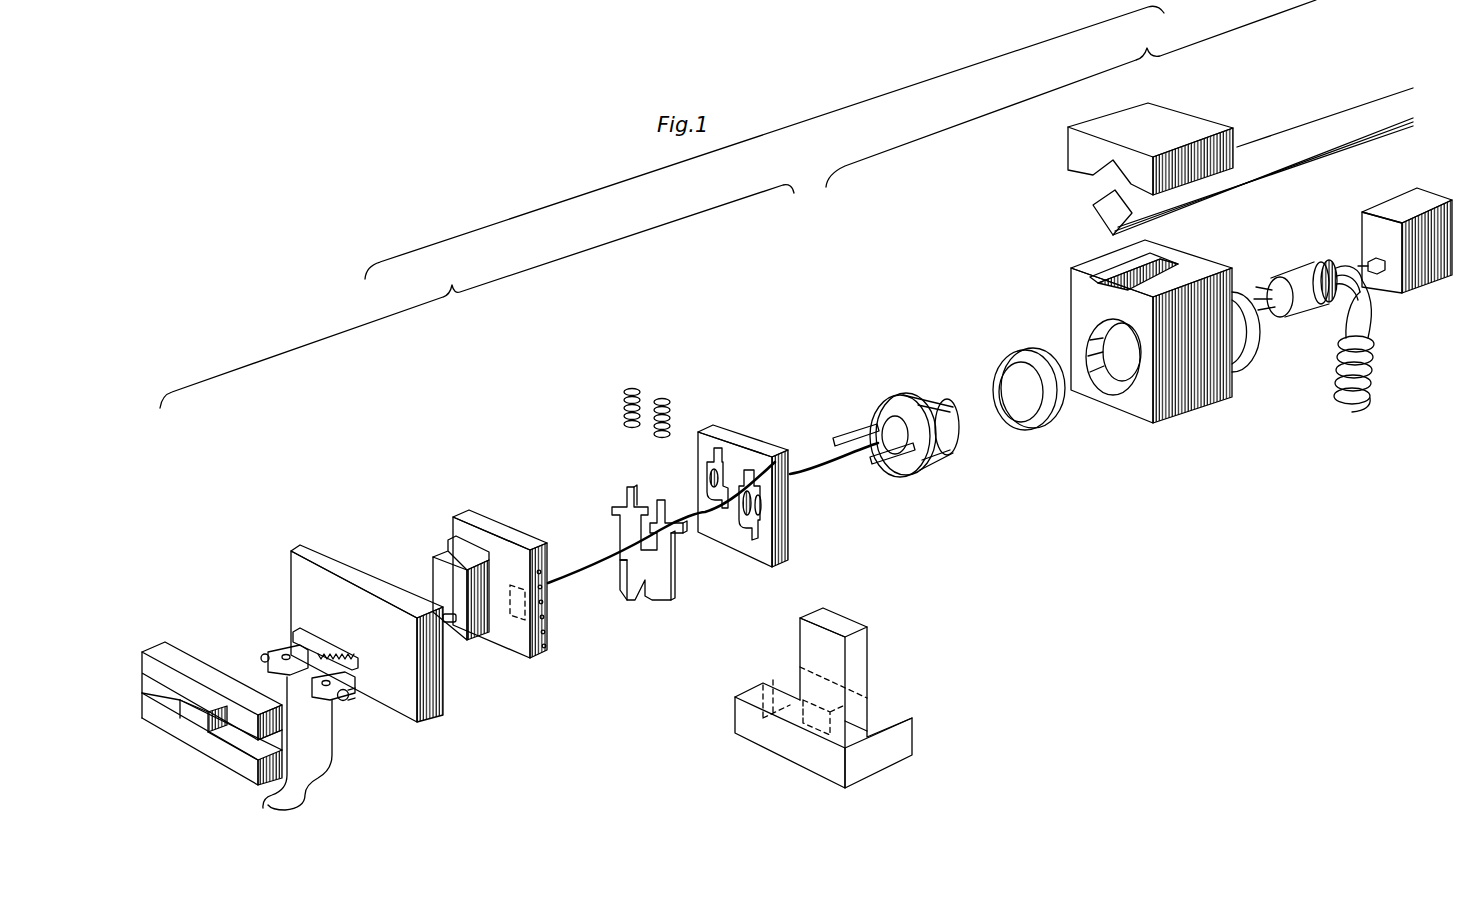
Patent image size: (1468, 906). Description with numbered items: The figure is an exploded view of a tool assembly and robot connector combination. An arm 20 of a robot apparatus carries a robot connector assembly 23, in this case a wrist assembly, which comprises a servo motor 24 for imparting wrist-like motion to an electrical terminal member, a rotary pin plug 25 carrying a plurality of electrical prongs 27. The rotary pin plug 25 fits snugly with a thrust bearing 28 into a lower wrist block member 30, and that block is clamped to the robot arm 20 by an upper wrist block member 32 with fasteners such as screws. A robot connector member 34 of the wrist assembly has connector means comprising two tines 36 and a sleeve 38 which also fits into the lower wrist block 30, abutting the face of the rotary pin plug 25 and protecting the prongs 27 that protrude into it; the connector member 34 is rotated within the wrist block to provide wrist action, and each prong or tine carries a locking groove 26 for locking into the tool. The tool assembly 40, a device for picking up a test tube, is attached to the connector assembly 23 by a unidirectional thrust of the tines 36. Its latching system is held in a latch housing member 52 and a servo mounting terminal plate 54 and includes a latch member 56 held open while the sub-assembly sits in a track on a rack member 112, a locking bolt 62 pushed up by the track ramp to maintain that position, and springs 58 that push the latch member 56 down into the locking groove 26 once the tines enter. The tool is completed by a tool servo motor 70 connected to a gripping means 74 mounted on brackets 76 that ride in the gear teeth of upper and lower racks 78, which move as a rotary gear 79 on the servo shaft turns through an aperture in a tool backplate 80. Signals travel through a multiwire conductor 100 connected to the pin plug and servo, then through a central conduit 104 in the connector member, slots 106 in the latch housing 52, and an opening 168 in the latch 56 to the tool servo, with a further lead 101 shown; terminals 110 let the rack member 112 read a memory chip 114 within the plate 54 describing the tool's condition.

The arm 20 is at (1290, 140).
The robot connector assembly 23 is at (1071, 93).
The servo motor 24 is at (1407, 282).
The rotary pin plug 25 is at (1313, 303).
The locking groove 26 is at (852, 438).
The electrical prongs 27 is at (1267, 283).
The thrust bearing 28 is at (1058, 417).
The lower wrist block member 30 is at (1193, 407).
The upper wrist block member 32 is at (1180, 130).
The robot connector member 34 is at (884, 432).
The tines 36 is at (856, 424).
The sleeve 38 is at (933, 400).
The tool assembly 40 is at (477, 296).
The latch housing member 52 is at (722, 432).
The servo mounting terminal plate 54 is at (488, 515).
The latch member 56 is at (680, 571).
The coil springs 58 is at (662, 400).
The locking bolt 62 is at (645, 598).
The tool servo motor 70 is at (443, 580).
The gripping means 74 is at (282, 813).
The brackets 76 is at (362, 695).
The upper and lower racks 78 is at (313, 650).
The rotary gear 79 is at (357, 665).
The tool backplate 80 is at (311, 551).
The multiwire conductor 100 is at (1364, 392).
The lead wire 101 is at (845, 462).
The central conduit 104 is at (1123, 393).
The slots 106 is at (753, 477).
The terminals 110 is at (545, 618).
The rack member 112 is at (900, 715).
The memory chip 114 is at (520, 637).
The opening 168 is at (648, 532).